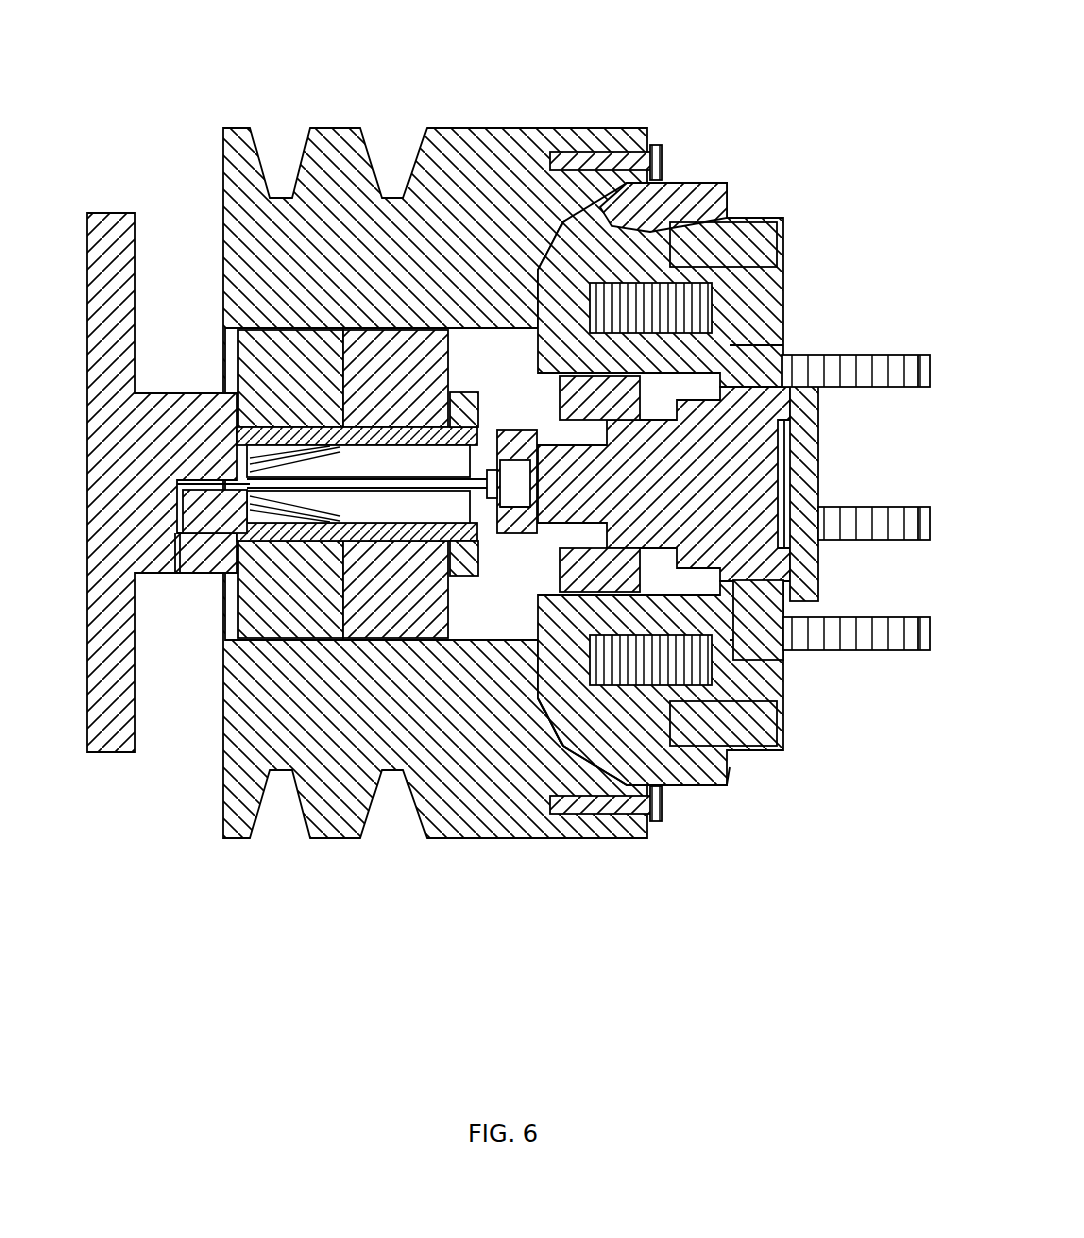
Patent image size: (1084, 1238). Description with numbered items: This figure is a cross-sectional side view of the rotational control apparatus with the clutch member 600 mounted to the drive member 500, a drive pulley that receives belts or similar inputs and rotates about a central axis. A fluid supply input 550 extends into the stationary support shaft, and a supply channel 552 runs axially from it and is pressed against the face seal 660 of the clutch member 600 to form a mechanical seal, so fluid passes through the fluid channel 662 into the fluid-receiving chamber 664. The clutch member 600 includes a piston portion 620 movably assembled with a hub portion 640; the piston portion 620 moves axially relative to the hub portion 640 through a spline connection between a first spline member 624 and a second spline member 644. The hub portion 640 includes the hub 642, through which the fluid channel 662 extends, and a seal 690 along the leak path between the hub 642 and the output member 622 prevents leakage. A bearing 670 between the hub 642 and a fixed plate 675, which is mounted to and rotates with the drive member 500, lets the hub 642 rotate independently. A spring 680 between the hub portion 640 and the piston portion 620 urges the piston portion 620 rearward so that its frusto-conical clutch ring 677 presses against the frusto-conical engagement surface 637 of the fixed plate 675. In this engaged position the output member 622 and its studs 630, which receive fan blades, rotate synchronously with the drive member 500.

The drive member 500 is at (367, 435).
The fluid supply input 550 is at (178, 553).
The supply channel 552 is at (203, 483).
The clutch member 600 is at (708, 456).
The piston portion 620 is at (805, 216).
The output member 622 is at (818, 567).
The first spline member 624 is at (818, 397).
The studs 630 is at (880, 388).
The frusto-conical engagement surface 637 is at (730, 768).
The hub portion 640 is at (674, 812).
The hub 642 is at (513, 467).
The second spline member 644 is at (810, 462).
The face seal 660 is at (493, 430).
The fluid channel 662 is at (513, 533).
The fluid-receiving chamber 664 is at (737, 350).
The bearing 670 is at (560, 573).
The fixed plate 675 is at (720, 787).
The frusto-conical clutch ring 677 is at (730, 200).
The spring 680 is at (730, 317).
The seal 690 is at (777, 268).